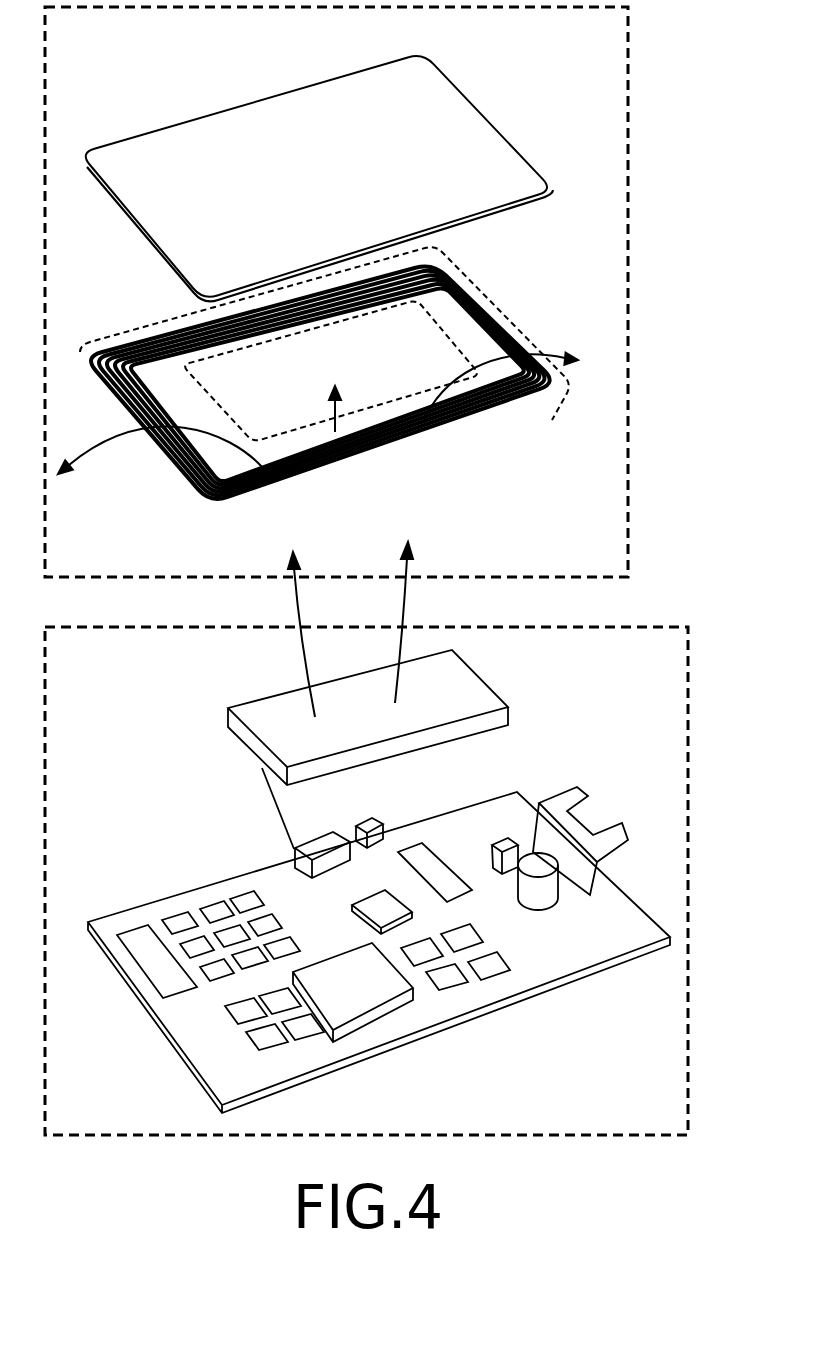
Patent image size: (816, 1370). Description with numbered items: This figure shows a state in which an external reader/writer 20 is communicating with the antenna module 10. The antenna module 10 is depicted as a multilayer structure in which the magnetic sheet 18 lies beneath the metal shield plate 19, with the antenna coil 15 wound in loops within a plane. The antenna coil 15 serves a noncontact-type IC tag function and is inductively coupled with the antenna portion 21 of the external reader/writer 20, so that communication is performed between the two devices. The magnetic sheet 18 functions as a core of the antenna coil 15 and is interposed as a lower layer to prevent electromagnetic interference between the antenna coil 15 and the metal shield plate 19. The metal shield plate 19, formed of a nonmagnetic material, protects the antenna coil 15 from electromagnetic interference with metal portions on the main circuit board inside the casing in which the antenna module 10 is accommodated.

The antenna module 10 is at (627, 292).
The antenna coil 15 is at (537, 413).
The magnetic sheet 18 is at (137, 327).
The metal shield plate 19 is at (495, 88).
The external reader/writer 20 is at (690, 838).
The antenna portion 21 is at (508, 710).